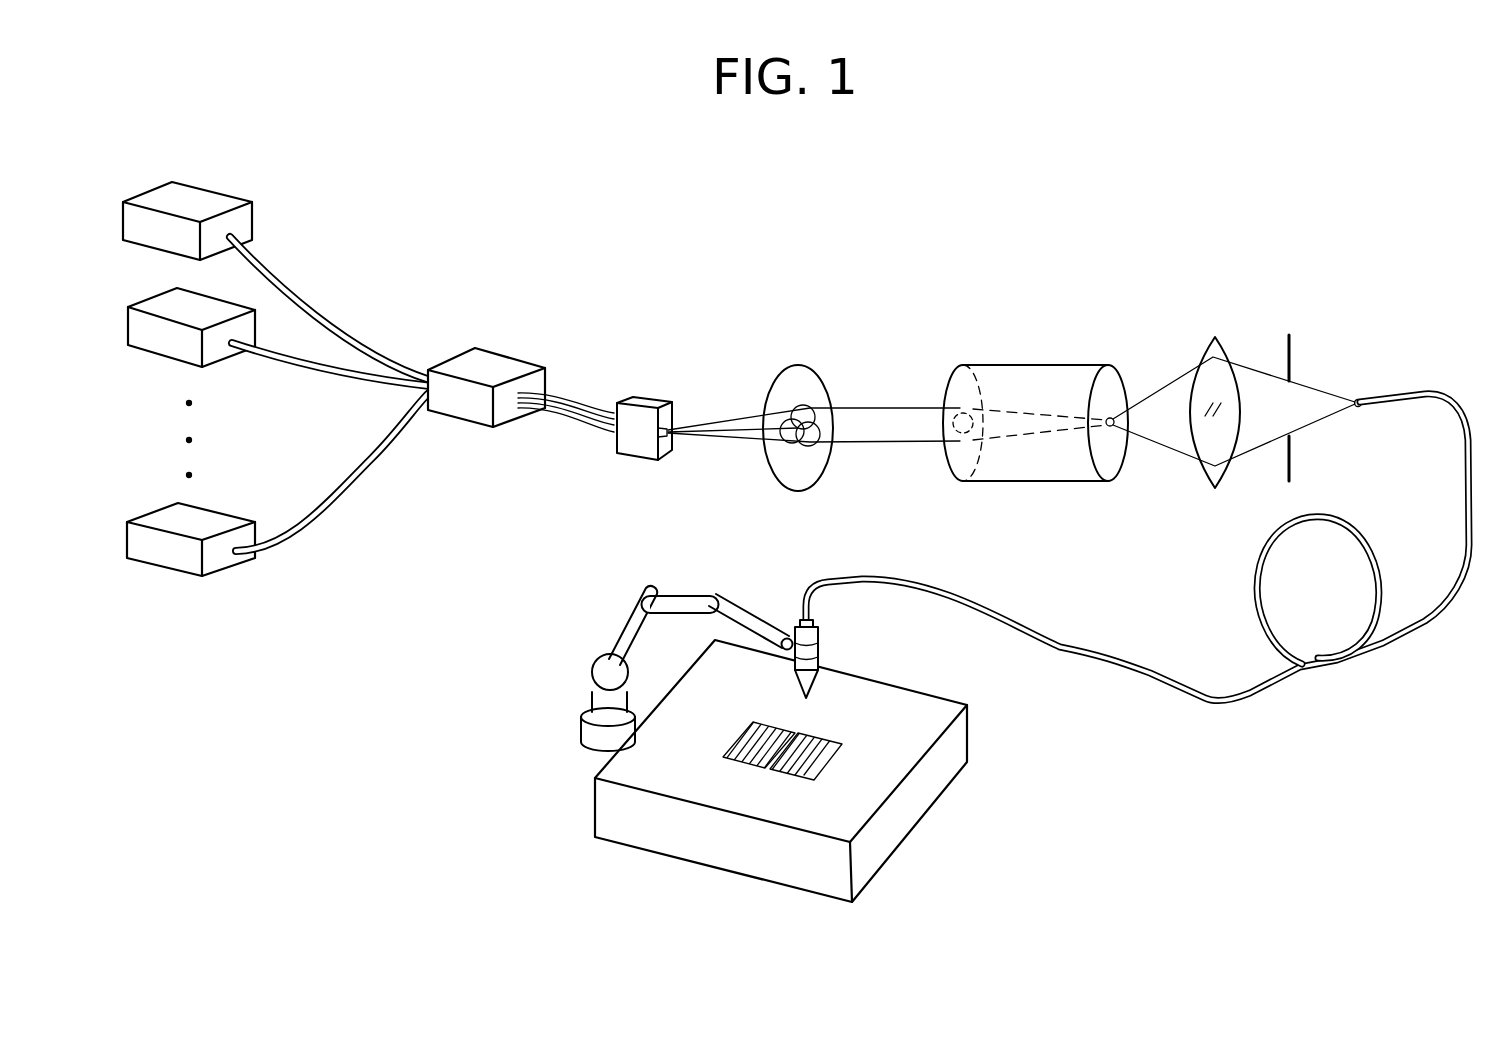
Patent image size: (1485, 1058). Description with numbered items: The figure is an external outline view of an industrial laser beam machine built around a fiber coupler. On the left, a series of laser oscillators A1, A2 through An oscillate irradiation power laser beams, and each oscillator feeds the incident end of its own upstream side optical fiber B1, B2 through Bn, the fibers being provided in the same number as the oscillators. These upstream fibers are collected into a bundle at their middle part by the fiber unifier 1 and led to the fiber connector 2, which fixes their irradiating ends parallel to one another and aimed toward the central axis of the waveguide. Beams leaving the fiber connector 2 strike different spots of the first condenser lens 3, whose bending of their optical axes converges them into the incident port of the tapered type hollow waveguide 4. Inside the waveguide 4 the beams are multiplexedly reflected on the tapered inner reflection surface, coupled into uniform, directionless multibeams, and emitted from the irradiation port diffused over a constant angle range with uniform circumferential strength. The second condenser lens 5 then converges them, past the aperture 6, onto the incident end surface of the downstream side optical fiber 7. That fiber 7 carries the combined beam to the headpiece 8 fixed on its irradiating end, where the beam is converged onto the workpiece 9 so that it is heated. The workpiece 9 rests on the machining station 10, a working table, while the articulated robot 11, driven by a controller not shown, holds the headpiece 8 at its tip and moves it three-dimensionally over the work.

The laser oscillator A1 is at (212, 190).
The laser oscillator A2 is at (153, 360).
The laser oscillator An is at (190, 577).
The upstream side optical fiber B1 is at (345, 330).
The upstream side optical fiber B2 is at (326, 380).
The upstream side optical fiber Bn is at (337, 507).
The fiber unifier 1 is at (508, 368).
The fiber connector 2 is at (637, 417).
The first condenser lens 3 is at (793, 387).
The tapered type hollow waveguide 4 is at (1027, 383).
The second condenser lens 5 is at (1202, 352).
The aperture 6 is at (1291, 358).
The downstream side optical fiber 7 is at (1382, 652).
The headpiece 8 is at (820, 660).
The workpiece 9 is at (745, 765).
The machining station 10 is at (580, 798).
The articulated robot 11 is at (617, 635).